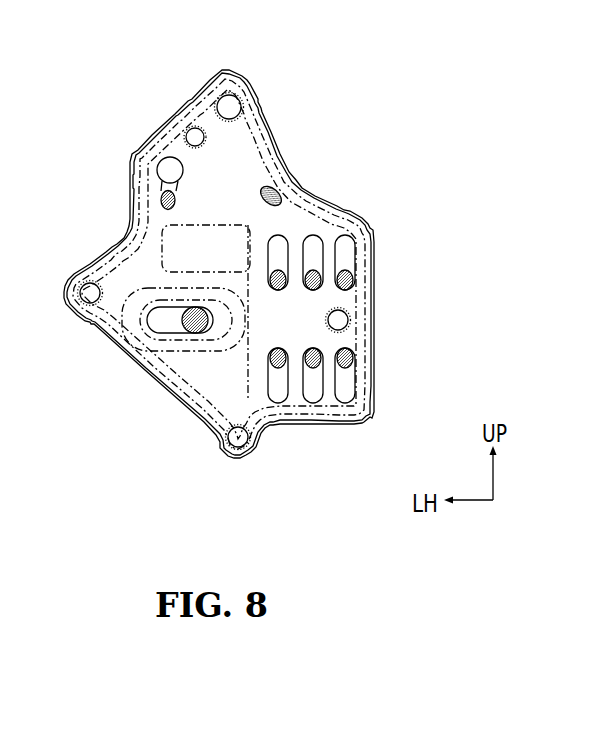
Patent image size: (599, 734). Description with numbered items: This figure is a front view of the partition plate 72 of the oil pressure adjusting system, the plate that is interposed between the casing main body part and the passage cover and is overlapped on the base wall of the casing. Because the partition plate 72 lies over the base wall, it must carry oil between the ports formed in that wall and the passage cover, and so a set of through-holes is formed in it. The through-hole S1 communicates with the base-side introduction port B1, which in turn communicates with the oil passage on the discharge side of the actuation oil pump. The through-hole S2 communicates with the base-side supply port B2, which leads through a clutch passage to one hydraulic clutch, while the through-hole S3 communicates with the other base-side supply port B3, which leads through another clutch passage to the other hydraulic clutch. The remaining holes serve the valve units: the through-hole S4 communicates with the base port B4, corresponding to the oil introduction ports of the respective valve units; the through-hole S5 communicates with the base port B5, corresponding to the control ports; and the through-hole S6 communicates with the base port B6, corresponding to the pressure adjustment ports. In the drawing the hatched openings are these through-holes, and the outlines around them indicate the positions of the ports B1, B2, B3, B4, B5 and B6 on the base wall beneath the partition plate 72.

The partition plate 72 is at (288, 97).
The base-side introduction port B1 is at (193, 345).
The base-side supply port B2 is at (238, 94).
The base-side supply port B3 is at (164, 158).
The base port B4 is at (308, 246).
The base port B5 is at (353, 247).
The base port B6 is at (270, 236).
The through-hole S1 is at (187, 333).
The through-hole S2 is at (283, 197).
The through-hole S3 is at (161, 196).
The through-hole S4 is at (320, 275).
The through-hole S5 is at (349, 282).
The through-hole S6 is at (283, 273).